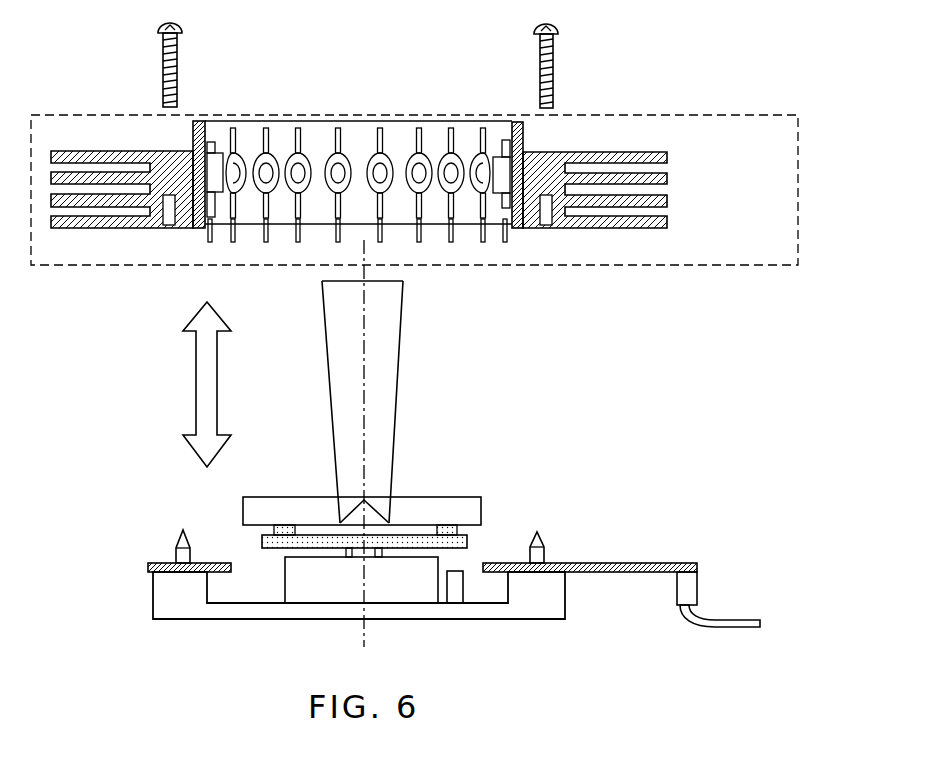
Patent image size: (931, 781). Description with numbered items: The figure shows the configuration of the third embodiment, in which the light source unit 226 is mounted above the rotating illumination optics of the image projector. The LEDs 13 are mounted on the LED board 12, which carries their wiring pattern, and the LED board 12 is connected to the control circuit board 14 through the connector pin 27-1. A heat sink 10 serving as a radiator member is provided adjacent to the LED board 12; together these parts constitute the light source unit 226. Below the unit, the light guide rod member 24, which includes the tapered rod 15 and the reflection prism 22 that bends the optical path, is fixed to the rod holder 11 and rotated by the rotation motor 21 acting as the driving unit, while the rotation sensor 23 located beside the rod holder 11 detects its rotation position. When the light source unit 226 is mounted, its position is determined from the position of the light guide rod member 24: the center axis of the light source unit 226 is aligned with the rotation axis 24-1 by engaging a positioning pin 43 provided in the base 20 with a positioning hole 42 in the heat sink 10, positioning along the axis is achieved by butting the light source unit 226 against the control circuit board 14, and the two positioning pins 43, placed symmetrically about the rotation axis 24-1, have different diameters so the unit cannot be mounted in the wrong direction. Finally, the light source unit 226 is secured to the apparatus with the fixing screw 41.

The heat sink 10 is at (668, 178).
The rod holder 11 is at (262, 541).
The LED board 12 is at (513, 229).
The LEDs 13 is at (499, 157).
The control circuit board 14 is at (615, 575).
The tapered rod 15 is at (388, 337).
The base 20 is at (173, 597).
The rotation motor 21 is at (298, 580).
The reflection prism 22 is at (378, 522).
The rotation sensor 23 is at (457, 575).
The light guide rod member 24 is at (340, 374).
The rotation axis 24-1 is at (366, 450).
The connector pin 27-1 is at (480, 243).
The fixing screw 41 is at (177, 56).
The positioning hole 42 is at (169, 228).
The positioning pin 43 is at (176, 541).
The light source unit 226 is at (718, 114).